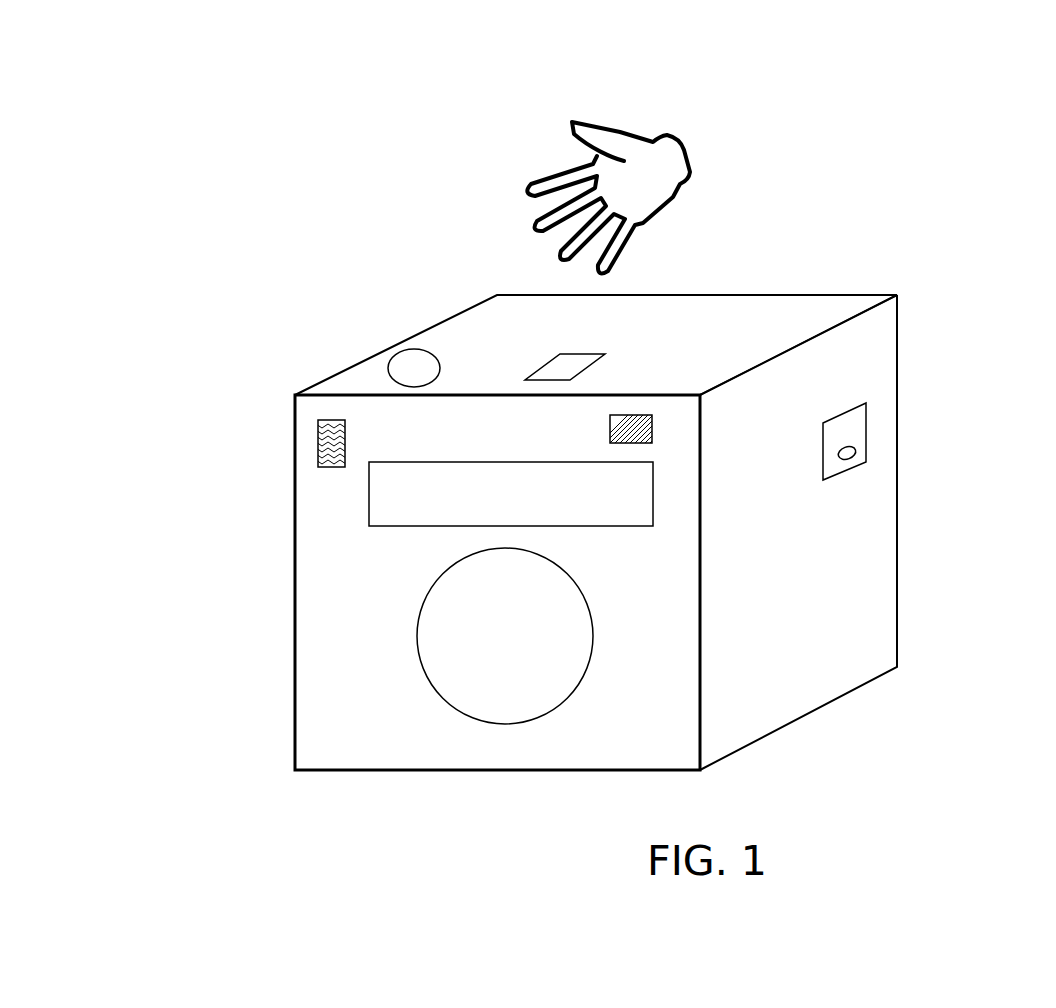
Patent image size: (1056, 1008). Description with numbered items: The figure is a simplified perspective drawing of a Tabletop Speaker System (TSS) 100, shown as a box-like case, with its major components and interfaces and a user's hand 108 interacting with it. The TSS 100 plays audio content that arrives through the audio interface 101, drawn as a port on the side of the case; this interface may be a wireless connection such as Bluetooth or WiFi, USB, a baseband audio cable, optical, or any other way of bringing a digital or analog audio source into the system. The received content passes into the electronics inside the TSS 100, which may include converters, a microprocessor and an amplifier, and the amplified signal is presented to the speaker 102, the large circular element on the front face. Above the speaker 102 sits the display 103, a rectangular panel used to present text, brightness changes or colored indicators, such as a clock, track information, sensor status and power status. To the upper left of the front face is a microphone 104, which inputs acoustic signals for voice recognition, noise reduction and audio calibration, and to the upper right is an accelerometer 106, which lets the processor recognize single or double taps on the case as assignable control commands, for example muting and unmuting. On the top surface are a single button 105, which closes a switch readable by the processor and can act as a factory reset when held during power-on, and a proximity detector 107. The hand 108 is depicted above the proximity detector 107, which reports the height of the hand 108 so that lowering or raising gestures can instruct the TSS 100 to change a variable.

The Tabletop Speaker System 100 is at (863, 592).
The audio interface 101 is at (865, 430).
The speaker 102 is at (418, 643).
The display 103 is at (382, 500).
The microphone 104 is at (315, 440).
The button 105 is at (390, 368).
The accelerometer 106 is at (608, 428).
The proximity detector 107 is at (605, 361).
The hand 108 is at (702, 183).